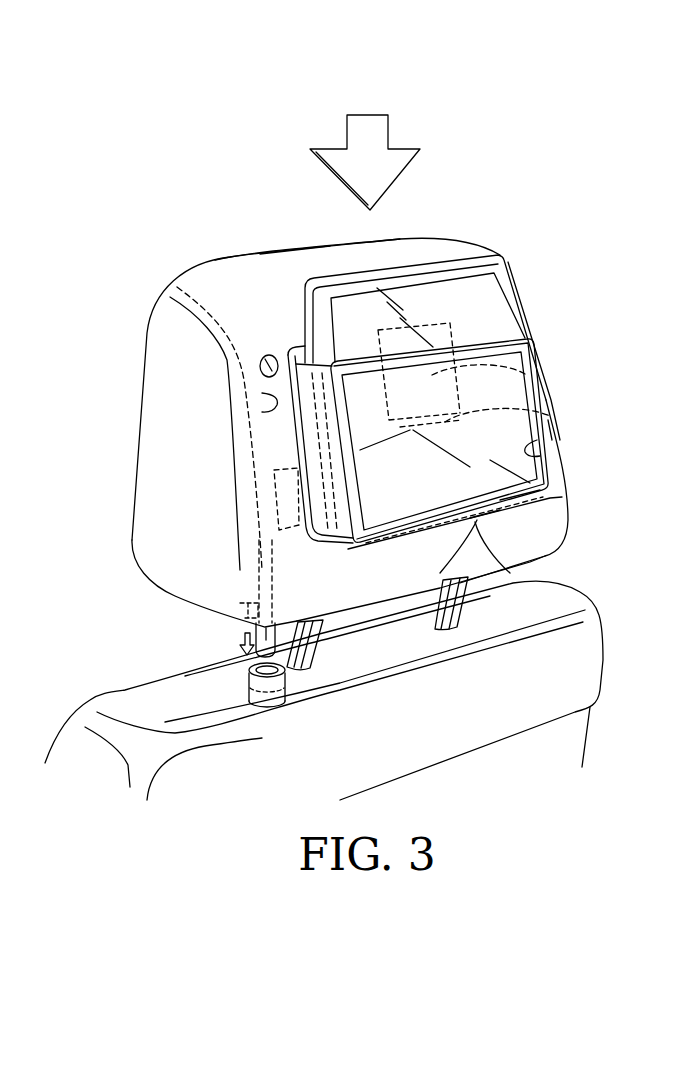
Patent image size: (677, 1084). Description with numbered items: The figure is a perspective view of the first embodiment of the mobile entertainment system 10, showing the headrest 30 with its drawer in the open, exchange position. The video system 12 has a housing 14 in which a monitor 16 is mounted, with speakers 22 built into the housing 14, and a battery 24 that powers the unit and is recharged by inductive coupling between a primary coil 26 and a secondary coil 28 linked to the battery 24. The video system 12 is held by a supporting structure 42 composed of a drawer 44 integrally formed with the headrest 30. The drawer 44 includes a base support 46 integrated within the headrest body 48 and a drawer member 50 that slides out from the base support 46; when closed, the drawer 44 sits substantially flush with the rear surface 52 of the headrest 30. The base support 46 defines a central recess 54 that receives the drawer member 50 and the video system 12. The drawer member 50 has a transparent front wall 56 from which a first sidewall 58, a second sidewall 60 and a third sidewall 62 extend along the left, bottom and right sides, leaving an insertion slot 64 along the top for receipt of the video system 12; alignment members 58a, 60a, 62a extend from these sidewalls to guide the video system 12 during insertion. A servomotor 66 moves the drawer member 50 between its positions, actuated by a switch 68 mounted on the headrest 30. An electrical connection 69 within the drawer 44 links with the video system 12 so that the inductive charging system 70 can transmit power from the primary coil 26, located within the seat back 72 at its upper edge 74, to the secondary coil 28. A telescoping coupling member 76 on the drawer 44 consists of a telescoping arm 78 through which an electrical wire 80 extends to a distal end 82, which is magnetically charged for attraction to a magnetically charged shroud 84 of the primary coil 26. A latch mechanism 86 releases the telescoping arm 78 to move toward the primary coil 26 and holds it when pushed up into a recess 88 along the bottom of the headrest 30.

The mobile entertainment system 10 is at (556, 213).
The video system 12 is at (502, 257).
The housing 14 is at (450, 256).
The monitor 16 is at (487, 310).
The speakers 22 is at (331, 287).
The battery 24 is at (545, 380).
The primary coil 26 is at (290, 712).
The secondary coil 28 is at (530, 418).
The headrest 30 is at (200, 272).
The supporting structure 42 is at (547, 288).
The drawer 44 is at (560, 494).
The base support 46 is at (300, 415).
The headrest body 48 is at (293, 256).
The drawer member 50 is at (320, 485).
The rear surface 52 is at (262, 412).
The central recess 54 is at (296, 344).
The transparent front wall 56 is at (380, 493).
The first sidewall 58 is at (310, 427).
The alignment member 58a is at (325, 455).
The second sidewall 60 is at (520, 560).
The alignment member 60a is at (520, 495).
The third sidewall 62 is at (540, 450).
The alignment member 62a is at (545, 430).
The insertion slot 64 is at (290, 350).
The servomotor 66 is at (273, 498).
The switch 68 is at (261, 356).
The electrical connection 69 is at (483, 510).
The inductive charging system 70 is at (247, 690).
The seat back 72 is at (580, 663).
The upper edge 74 is at (138, 707).
The telescoping coupling member 76 is at (283, 656).
The telescoping arm 78 is at (252, 620).
The electrical wire 80 is at (260, 635).
The distal end 82 is at (183, 675).
The shroud 84 is at (248, 683).
The latch mechanism 86 is at (240, 605).
The recess 88 is at (375, 546).